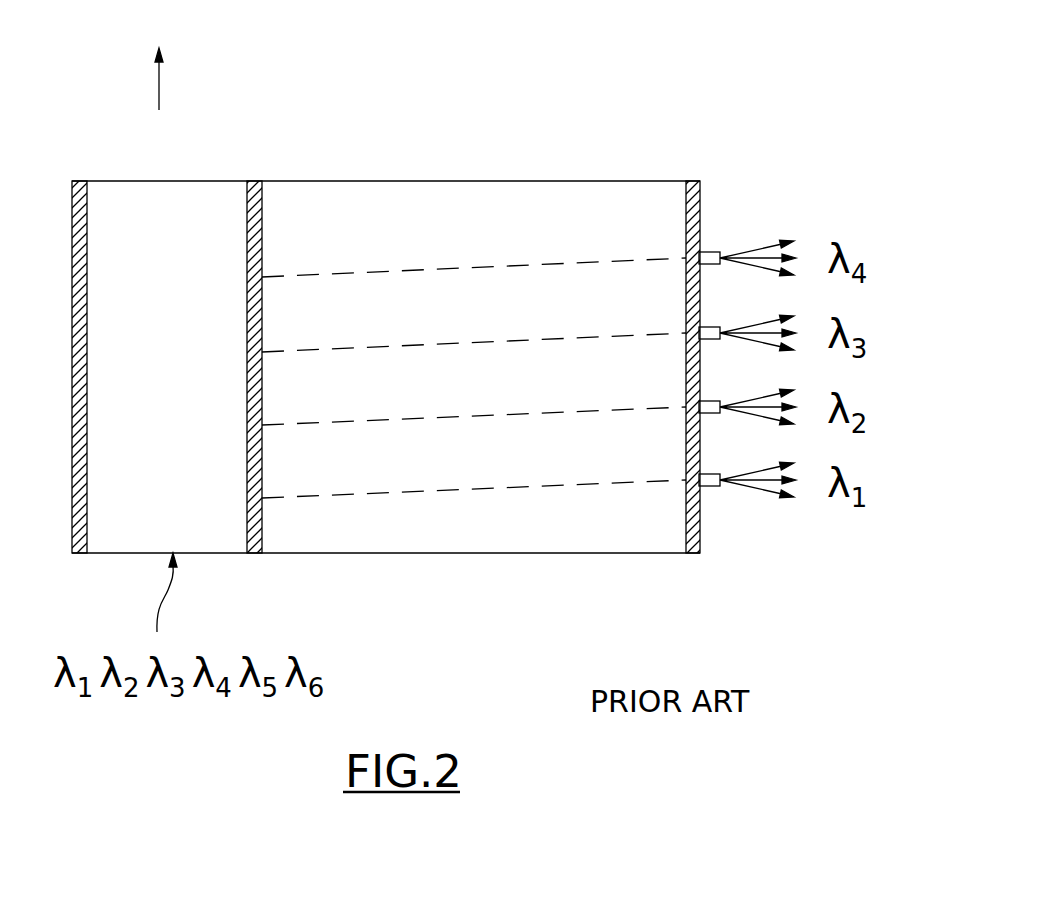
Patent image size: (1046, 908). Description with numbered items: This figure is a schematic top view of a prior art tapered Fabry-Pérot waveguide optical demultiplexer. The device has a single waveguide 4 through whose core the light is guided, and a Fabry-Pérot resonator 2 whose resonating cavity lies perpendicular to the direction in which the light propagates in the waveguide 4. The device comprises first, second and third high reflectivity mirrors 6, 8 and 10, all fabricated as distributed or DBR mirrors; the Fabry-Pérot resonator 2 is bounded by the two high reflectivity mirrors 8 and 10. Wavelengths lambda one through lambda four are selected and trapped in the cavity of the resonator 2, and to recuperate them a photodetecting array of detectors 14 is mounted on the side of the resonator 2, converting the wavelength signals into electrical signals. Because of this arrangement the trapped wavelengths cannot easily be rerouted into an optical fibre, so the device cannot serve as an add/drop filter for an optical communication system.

The Fabry-Pérot resonator 2 is at (400, 208).
The waveguide 4 is at (205, 198).
The first high reflectivity mirror 6 is at (78, 178).
The second high reflectivity mirror 8 is at (277, 213).
The third high reflectivity mirror 10 is at (695, 183).
The photodetecting array of detectors 14 is at (710, 247).